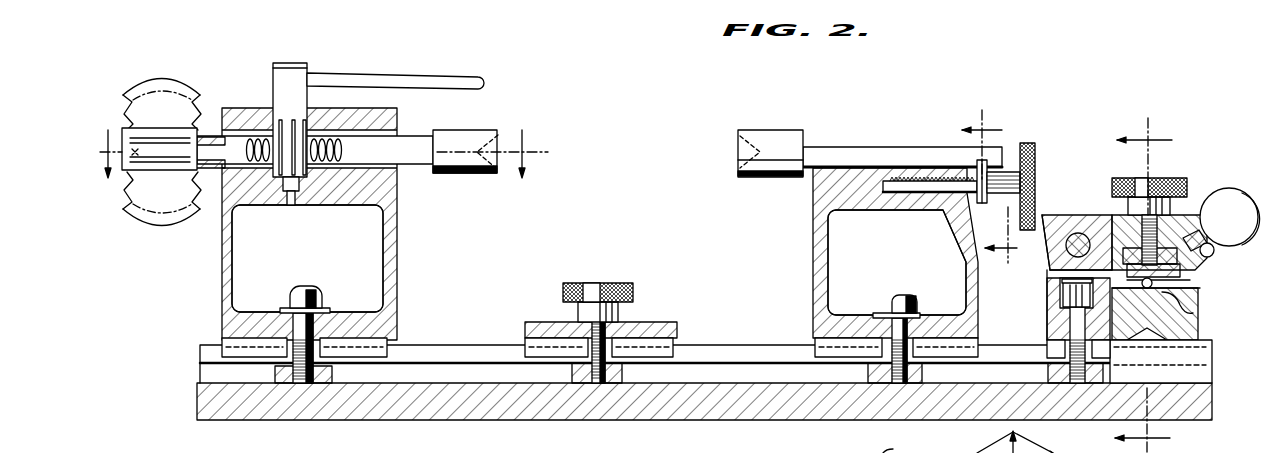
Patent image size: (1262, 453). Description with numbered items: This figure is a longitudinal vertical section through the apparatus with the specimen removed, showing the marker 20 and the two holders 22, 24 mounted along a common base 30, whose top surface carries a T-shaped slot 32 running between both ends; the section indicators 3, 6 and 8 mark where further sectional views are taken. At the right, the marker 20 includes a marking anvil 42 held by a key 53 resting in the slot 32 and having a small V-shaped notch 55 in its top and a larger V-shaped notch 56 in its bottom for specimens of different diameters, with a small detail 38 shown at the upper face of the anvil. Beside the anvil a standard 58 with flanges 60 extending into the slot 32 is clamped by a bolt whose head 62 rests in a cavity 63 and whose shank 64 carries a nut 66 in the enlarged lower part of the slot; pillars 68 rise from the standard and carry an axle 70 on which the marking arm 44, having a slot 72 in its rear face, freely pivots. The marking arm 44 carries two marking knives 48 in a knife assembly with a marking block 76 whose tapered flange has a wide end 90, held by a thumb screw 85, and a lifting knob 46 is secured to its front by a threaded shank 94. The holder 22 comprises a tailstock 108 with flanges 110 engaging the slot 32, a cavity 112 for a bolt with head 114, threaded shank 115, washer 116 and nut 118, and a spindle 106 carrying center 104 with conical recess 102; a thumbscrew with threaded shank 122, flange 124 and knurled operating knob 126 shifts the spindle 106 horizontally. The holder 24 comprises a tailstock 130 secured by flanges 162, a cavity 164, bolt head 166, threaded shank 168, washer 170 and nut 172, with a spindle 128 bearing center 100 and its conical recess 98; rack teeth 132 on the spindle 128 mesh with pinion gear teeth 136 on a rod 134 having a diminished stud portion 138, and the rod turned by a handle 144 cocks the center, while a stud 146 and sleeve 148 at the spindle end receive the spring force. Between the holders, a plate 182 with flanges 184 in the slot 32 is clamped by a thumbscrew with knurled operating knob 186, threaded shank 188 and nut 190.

The section line 3- 3 is at (1143, 285).
The section line 6- 6 is at (316, 163).
The section line 8- 8 is at (991, 188).
The marker 20 is at (1208, 163).
The holder 22 is at (862, 140).
The holder 24 is at (357, 62).
The base 30 is at (1197, 397).
The T-shaped slot 32 is at (212, 376).
The detent ball 38 is at (1153, 284).
The marking anvil 42 is at (1200, 301).
The marking arm 44 is at (1107, 218).
The lifting knob 46 is at (1230, 198).
The marking knives 48 is at (1200, 276).
The key 53 is at (1202, 356).
The small V-shaped notch 55 is at (1198, 313).
The larger V-shaped notch 56 is at (1160, 333).
The standard 58 is at (1052, 313).
The flanges 60 is at (1058, 348).
The bolt head 62 is at (1068, 296).
The cavity 63 is at (1063, 282).
The bolt shank 64 is at (1070, 330).
The nut 66 is at (1052, 373).
The pillars 68 is at (1047, 271).
The axle 70 is at (1075, 235).
The slot 72 is at (1062, 251).
The marking block 76 is at (1076, 446).
The thumb screw 85 is at (1156, 179).
The wide end 90 is at (1043, 452).
The threaded shank 94 is at (1216, 254).
The conical recess 98 is at (500, 137).
The center 100 is at (460, 137).
The conical recess 102 is at (740, 140).
The center 104 is at (766, 140).
The spindle 106 is at (890, 158).
The tailstock 108 is at (822, 254).
The flanges 110 is at (826, 351).
The cavity 112 is at (850, 237).
The bolt head 114 is at (895, 297).
The threaded shank 115 is at (920, 316).
The washer 116 is at (913, 297).
The nut 118 is at (920, 373).
The threaded shank 122 is at (938, 180).
The flange 124 is at (976, 204).
The knurled operating knob 126 is at (1035, 162).
The spindle 128 is at (412, 140).
The tailstock 130 is at (390, 250).
The rack teeth 132 is at (258, 150).
The rod 134 is at (281, 77).
The pinion gear teeth 136 is at (300, 172).
The diminished stud portion 138 is at (291, 205).
The handle lever 144 is at (443, 80).
The stud 146 is at (207, 140).
The sleeve 148 is at (212, 168).
The flanges 162 is at (228, 350).
The cavity 164 is at (364, 284).
The bolt head 166 is at (313, 300).
The threaded shank 168 is at (300, 326).
The washer 170 is at (285, 308).
The nut 172 is at (334, 373).
The plate 182 is at (645, 324).
The flanges 184 is at (665, 352).
The knurled operating knob 186 is at (594, 290).
The threaded shank 188 is at (590, 360).
The nut 190 is at (622, 373).